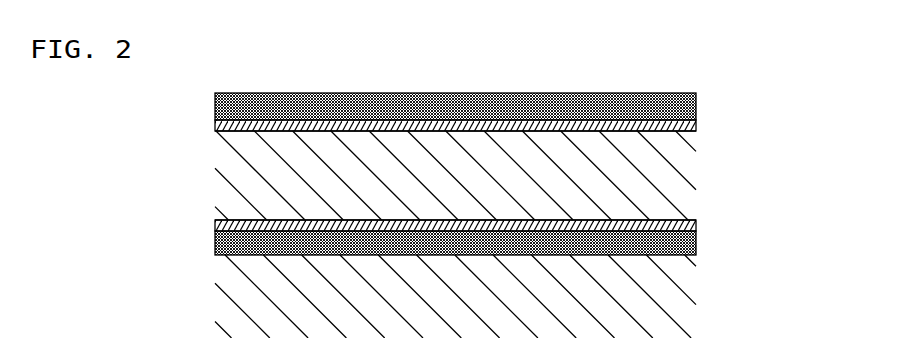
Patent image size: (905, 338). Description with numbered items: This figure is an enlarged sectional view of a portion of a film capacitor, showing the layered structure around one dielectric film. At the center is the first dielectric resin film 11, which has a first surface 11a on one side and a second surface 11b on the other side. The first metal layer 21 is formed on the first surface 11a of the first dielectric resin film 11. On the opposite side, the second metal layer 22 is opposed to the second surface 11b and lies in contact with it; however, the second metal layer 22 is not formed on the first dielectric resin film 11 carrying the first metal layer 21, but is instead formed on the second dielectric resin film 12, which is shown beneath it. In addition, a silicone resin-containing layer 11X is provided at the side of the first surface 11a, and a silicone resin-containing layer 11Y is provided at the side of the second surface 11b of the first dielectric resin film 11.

The first dielectric resin film 11 is at (683, 172).
The first surface 11a is at (694, 126).
The second surface 11b is at (697, 223).
The silicone resin-containing layer 11X is at (217, 125).
The silicone resin-containing layer 11Y is at (217, 226).
The first metal layer 21 is at (697, 108).
The second metal layer 22 is at (695, 243).
The second dielectric resin film 12 is at (680, 317).